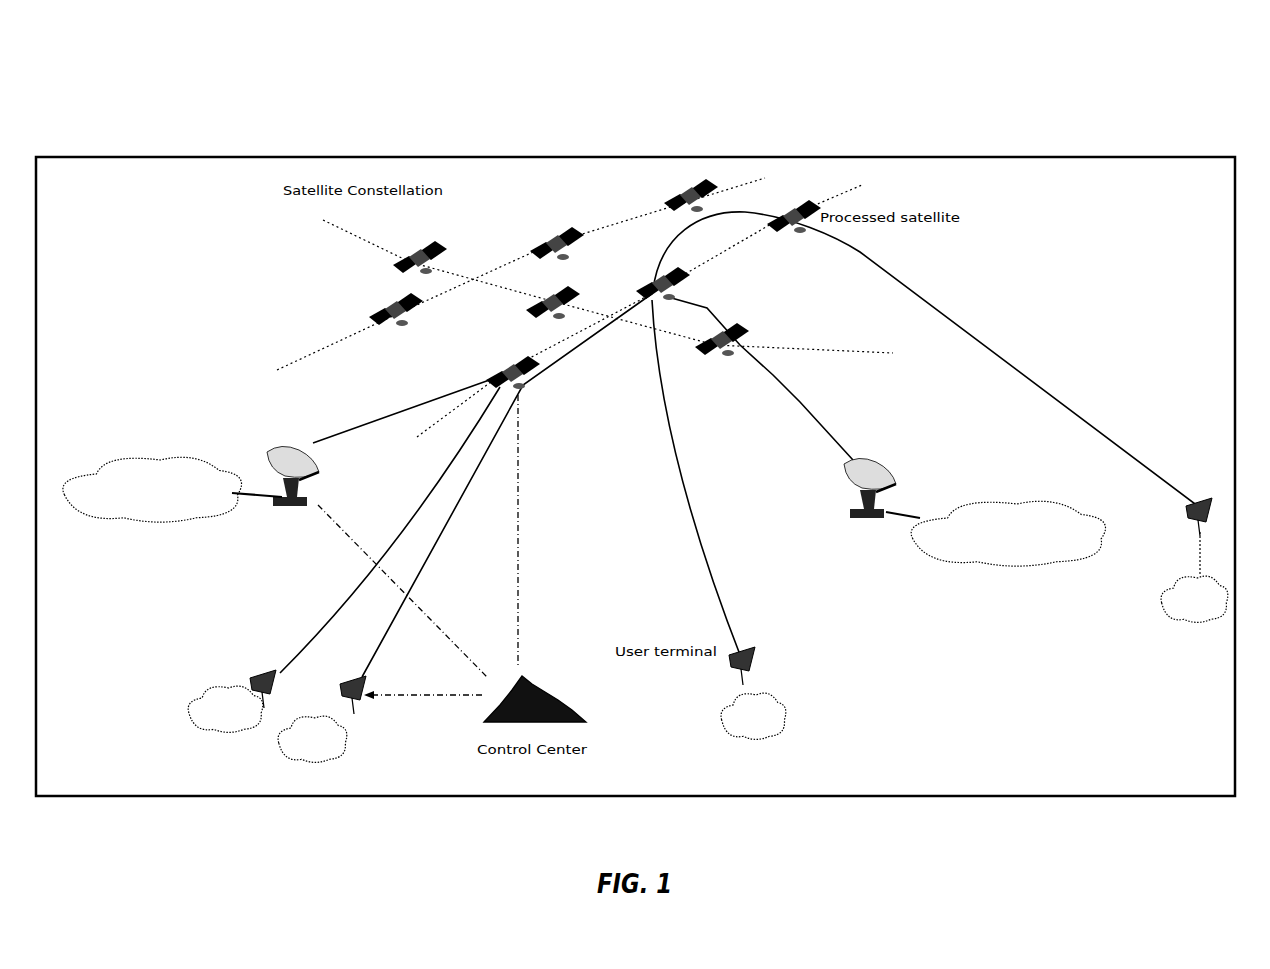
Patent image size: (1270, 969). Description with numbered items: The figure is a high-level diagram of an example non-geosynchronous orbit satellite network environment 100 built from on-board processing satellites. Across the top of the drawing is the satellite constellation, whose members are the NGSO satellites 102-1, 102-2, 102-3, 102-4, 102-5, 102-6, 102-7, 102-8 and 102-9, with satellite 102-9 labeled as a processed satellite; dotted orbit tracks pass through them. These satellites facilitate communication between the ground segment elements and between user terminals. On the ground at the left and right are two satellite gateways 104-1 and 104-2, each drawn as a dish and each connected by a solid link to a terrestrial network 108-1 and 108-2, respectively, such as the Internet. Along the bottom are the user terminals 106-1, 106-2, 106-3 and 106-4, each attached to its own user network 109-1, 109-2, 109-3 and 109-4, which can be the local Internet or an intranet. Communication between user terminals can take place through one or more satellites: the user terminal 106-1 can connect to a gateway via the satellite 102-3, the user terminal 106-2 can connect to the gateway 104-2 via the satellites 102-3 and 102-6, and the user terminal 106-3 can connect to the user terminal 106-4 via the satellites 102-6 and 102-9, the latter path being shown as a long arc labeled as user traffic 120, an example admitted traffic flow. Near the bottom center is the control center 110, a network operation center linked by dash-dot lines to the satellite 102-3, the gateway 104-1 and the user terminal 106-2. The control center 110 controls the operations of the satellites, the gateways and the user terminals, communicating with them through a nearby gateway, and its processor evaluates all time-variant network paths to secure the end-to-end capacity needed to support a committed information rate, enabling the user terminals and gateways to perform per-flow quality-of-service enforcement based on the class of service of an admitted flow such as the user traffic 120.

The NGSO satellite network environment 100 is at (121, 96).
The NGSO satellite 102-1 is at (378, 309).
The NGSO satellite 102-2 is at (400, 262).
The NGSO satellite 102-3 is at (497, 370).
The NGSO satellite 102-4 is at (549, 240).
The NGSO satellite 102-5 is at (535, 308).
The NGSO satellite 102-6 is at (650, 283).
The NGSO satellite 102-7 is at (682, 198).
The NGSO satellite 102-8 is at (708, 355).
The NGSO satellite 102-9 is at (798, 208).
The satellite gateway 104-1 is at (292, 520).
The satellite gateway 104-2 is at (870, 530).
The user terminal 106-1 is at (252, 682).
The user terminal 106-2 is at (352, 708).
The user terminal 106-3 is at (750, 680).
The user terminal 106-4 is at (1190, 524).
The terrestrial network 108-1 is at (120, 456).
The terrestrial network 108-2 is at (1046, 556).
The user network 109-1 is at (200, 726).
The user network 109-2 is at (280, 740).
The user network 109-3 is at (786, 710).
The user network 109-4 is at (1167, 616).
The control center 110 is at (582, 721).
The admitted traffic flow 120 is at (970, 326).